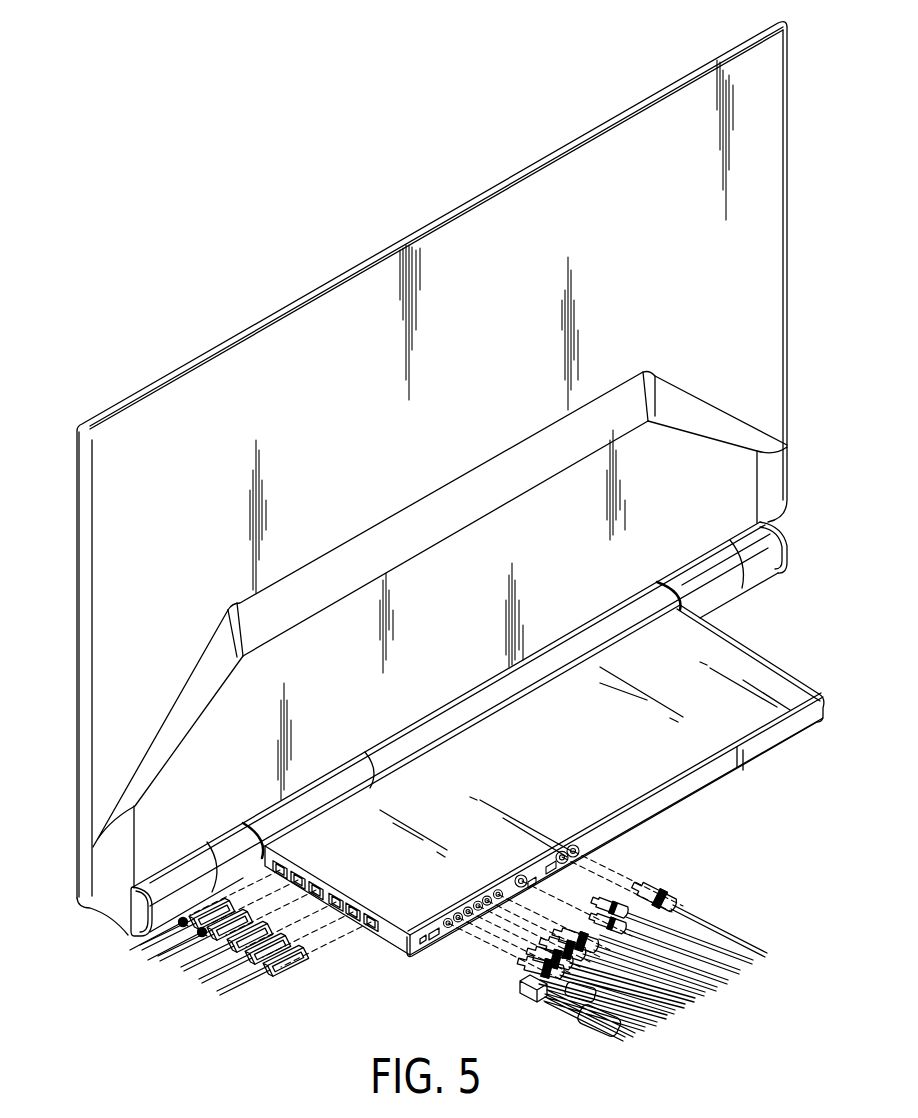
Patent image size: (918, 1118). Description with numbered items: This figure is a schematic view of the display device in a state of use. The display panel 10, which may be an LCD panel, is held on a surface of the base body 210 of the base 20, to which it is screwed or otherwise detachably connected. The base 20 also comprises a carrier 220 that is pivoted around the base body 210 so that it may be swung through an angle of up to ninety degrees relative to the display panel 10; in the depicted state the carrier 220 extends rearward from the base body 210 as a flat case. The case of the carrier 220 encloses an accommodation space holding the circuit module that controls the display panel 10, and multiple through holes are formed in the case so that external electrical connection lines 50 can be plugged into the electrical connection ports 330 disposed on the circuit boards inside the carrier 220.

The display panel 10 is at (172, 378).
The base 20 is at (104, 932).
The base body 210 is at (750, 574).
The carrier 220 is at (780, 648).
The electrical connection ports 330 is at (430, 940).
The external electrical connection lines 50 is at (310, 992).